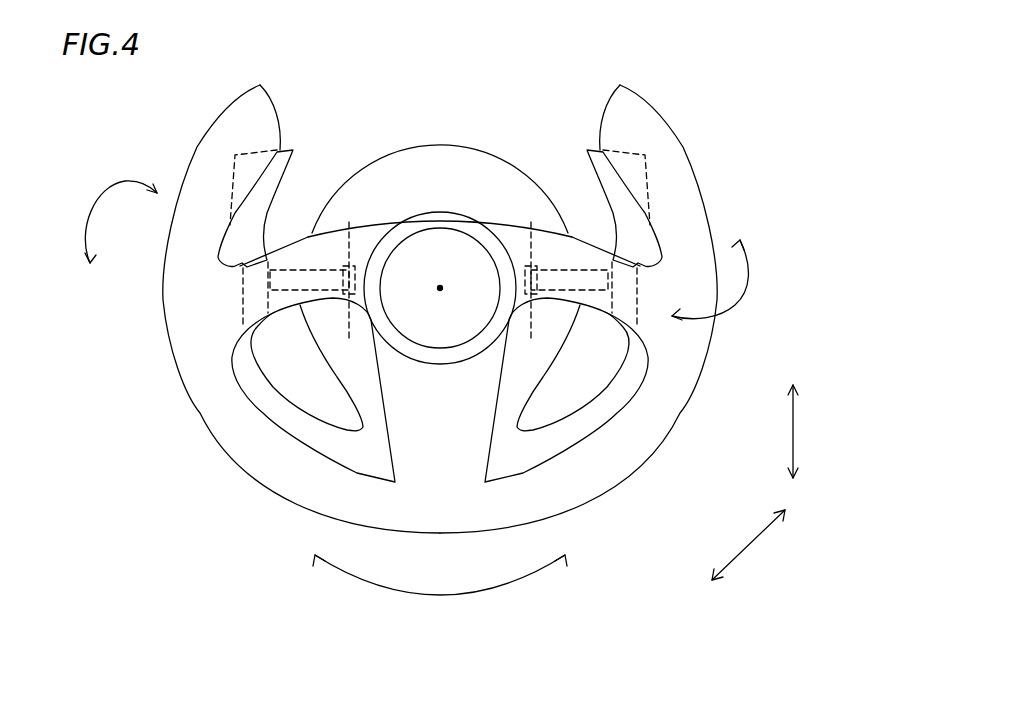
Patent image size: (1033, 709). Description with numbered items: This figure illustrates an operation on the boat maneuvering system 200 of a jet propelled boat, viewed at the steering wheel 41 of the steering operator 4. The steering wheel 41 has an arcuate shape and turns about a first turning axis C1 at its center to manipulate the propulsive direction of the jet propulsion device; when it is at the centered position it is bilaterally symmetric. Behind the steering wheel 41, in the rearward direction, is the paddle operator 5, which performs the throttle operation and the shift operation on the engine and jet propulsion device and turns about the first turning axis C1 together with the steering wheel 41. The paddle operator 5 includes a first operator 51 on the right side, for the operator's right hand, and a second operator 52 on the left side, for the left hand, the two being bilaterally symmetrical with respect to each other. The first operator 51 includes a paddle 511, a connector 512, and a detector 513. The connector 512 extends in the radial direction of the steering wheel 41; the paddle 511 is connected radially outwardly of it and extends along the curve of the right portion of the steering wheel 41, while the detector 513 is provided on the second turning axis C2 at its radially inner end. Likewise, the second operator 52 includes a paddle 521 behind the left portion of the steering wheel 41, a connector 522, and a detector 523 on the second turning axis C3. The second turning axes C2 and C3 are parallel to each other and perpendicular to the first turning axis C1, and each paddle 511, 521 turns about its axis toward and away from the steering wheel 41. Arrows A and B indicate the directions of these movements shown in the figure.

The boat maneuvering system 200 is at (676, 78).
The steering operator 4 is at (499, 313).
The steering wheel 41 is at (677, 161).
The paddle operator 5 is at (434, 303).
The first operator 51 is at (644, 312).
The paddle 511 is at (633, 240).
The connector 512 is at (580, 278).
The detector 513 is at (537, 293).
The second operator 52 is at (230, 299).
The paddle 521 is at (275, 363).
The connector 522 is at (300, 278).
The detector 523 is at (343, 290).
The first turning axis C1 is at (440, 288).
The second turning axis C2 is at (537, 245).
The second turning axis C3 is at (350, 240).
The direction A is at (748, 545).
The direction B is at (800, 431).